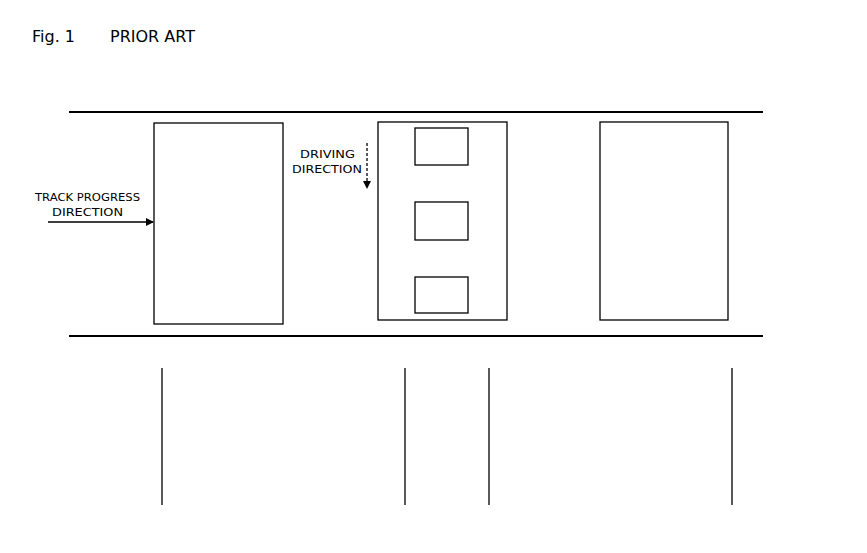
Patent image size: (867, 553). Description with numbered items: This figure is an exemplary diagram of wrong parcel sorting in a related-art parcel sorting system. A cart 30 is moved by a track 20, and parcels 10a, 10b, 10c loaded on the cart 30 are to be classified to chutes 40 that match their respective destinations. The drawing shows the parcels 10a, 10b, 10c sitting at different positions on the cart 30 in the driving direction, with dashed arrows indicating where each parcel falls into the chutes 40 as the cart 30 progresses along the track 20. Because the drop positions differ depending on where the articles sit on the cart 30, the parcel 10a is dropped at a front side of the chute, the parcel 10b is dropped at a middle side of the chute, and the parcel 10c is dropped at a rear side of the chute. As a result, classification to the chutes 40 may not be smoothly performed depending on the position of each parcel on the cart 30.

The parcel 10a is at (468, 313).
The parcel 10b is at (468, 237).
The parcel 10c is at (468, 163).
The track 20 is at (127, 112).
The cart 30 is at (442, 112).
The chutes 40 is at (732, 480).